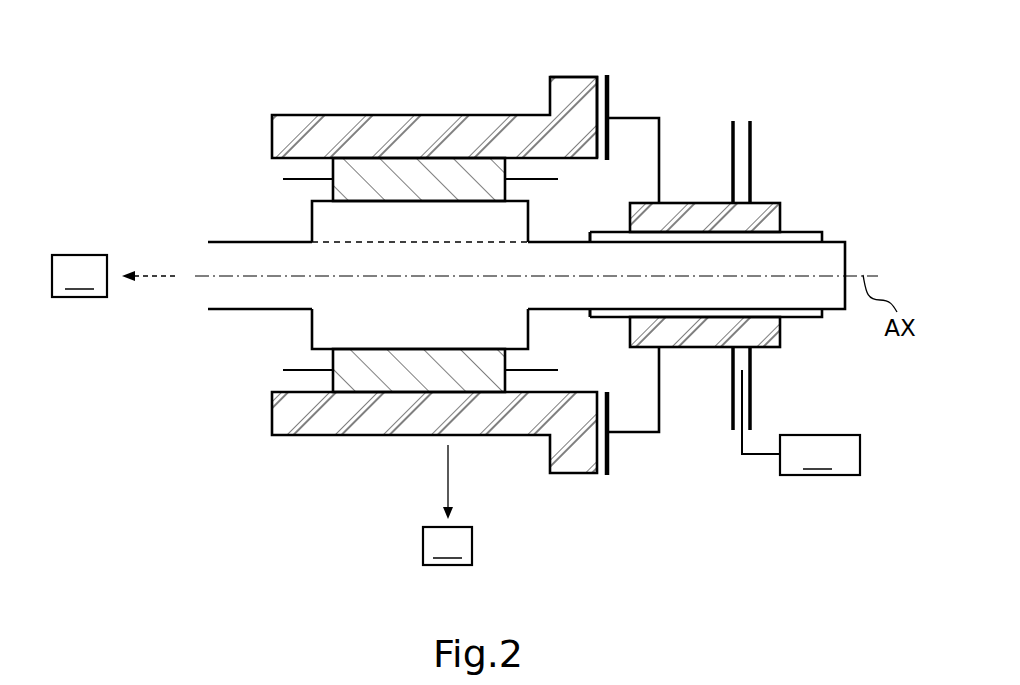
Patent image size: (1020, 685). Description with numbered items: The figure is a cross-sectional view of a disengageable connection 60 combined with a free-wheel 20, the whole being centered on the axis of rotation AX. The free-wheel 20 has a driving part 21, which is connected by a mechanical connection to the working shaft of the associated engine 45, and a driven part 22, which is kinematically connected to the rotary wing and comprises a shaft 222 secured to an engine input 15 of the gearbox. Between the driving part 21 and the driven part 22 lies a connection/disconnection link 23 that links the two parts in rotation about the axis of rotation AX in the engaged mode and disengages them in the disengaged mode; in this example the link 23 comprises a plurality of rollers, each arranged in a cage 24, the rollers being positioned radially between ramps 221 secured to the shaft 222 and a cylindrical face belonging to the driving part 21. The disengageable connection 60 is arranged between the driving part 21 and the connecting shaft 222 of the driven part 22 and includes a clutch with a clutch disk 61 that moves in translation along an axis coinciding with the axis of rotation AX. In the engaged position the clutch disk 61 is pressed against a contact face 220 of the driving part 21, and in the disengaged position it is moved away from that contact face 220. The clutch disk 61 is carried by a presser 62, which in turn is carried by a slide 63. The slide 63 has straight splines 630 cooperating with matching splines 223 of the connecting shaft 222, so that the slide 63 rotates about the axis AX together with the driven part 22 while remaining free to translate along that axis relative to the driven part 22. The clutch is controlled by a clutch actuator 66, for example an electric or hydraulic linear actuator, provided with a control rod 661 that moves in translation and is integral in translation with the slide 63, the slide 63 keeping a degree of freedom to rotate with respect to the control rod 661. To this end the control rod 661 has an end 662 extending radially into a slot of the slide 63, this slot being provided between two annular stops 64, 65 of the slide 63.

The engine input 15 is at (113, 276).
The free-wheel 20 is at (208, 442).
The driving part 21 is at (343, 436).
The driven part 22 is at (521, 276).
The connection/disconnection link 23 is at (333, 188).
The cage 24 is at (300, 370).
The engine 45 is at (447, 505).
The disengageable connection 60 is at (653, 484).
The clutch disk 61 is at (609, 100).
The presser 62 is at (660, 152).
The slide 63 is at (783, 212).
The annular stop 64 is at (731, 134).
The annular stop 65 is at (753, 134).
The clutch actuator 66 is at (820, 455).
The contact face 220 is at (603, 77).
The ramps 221 is at (440, 344).
The shaft 222 is at (335, 288).
The matching splines 223 is at (612, 232).
The straight splines 630 is at (783, 217).
The control rod 661 is at (757, 455).
The end 662 is at (746, 395).